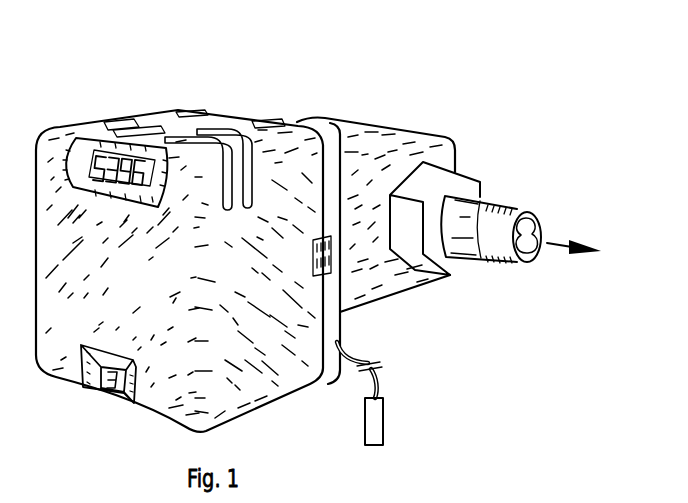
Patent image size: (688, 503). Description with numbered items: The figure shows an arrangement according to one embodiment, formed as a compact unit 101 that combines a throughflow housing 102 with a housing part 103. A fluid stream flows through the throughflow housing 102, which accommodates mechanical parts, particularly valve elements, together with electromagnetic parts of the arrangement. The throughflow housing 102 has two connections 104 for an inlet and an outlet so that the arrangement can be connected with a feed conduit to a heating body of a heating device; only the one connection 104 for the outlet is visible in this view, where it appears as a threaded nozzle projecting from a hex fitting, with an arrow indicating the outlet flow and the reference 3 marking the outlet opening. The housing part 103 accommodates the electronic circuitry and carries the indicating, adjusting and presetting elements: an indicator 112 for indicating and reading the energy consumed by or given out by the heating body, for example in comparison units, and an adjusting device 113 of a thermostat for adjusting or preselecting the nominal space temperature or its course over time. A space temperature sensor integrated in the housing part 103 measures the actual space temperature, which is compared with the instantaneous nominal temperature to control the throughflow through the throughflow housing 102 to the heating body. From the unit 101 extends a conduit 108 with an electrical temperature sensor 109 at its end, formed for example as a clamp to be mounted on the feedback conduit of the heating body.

The compact unit 101 is at (320, 96).
The throughflow housing 102 is at (369, 131).
The housing part 103 is at (242, 133).
The connection 104 is at (480, 210).
The outlet orifice 3 is at (533, 222).
The conduit 108 is at (367, 357).
The electrical temperature sensor 109 is at (373, 422).
The indicator 112 is at (109, 157).
The adjusting device 113 is at (122, 392).